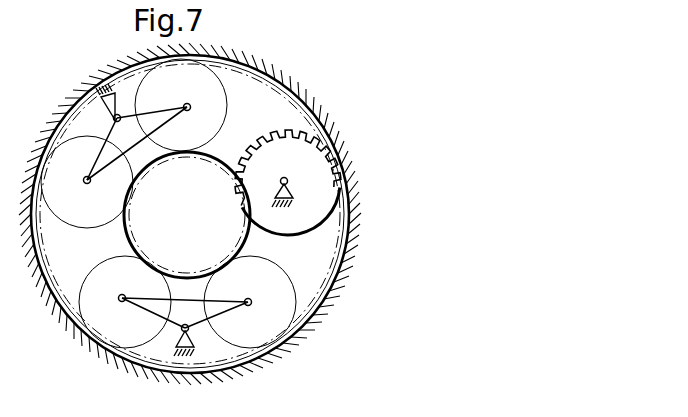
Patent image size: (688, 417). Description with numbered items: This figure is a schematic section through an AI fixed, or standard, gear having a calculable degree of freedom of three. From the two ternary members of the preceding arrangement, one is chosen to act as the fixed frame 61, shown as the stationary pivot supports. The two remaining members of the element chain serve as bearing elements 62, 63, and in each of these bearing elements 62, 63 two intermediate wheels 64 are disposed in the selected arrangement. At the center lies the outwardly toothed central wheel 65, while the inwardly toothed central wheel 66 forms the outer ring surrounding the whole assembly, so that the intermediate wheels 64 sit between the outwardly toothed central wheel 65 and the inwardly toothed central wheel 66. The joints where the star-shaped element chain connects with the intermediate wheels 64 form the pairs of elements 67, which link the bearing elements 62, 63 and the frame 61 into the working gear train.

The frame 61 is at (112, 118).
The bearing element 62 is at (186, 278).
The bearing element 63 is at (160, 127).
The intermediate wheel 64 is at (233, 92).
The outwardly toothed central wheel 65 is at (135, 236).
The inwardly toothed central wheel 66 is at (343, 263).
The pairs of elements 67 is at (189, 104).